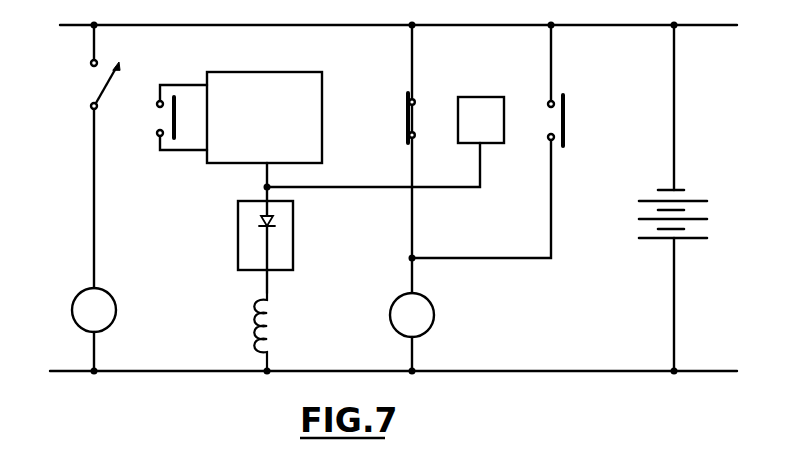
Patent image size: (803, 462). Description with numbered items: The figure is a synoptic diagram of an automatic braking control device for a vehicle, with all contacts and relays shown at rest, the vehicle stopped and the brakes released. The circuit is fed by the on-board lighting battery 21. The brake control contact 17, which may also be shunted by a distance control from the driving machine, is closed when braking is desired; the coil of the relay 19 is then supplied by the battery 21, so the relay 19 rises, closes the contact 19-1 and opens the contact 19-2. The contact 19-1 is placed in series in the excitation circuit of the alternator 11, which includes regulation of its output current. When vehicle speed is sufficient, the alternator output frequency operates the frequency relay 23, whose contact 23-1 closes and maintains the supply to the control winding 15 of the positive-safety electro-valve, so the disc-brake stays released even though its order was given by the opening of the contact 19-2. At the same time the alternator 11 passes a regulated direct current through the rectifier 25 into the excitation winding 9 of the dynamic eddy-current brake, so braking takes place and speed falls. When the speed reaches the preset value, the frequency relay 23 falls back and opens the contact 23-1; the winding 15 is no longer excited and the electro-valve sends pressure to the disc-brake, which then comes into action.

The brake control contact 17 is at (95, 83).
The relay 19 is at (100, 305).
The contact 19-1 is at (160, 120).
The alternator 11 is at (310, 117).
The contact 19-2 is at (408, 131).
The frequency relay 23 is at (484, 105).
The contact 23-1 is at (557, 119).
The rectifier 25 is at (275, 222).
The excitation winding 9 is at (278, 333).
The control winding of the electro-valve 15 is at (430, 322).
The battery 21 is at (718, 194).